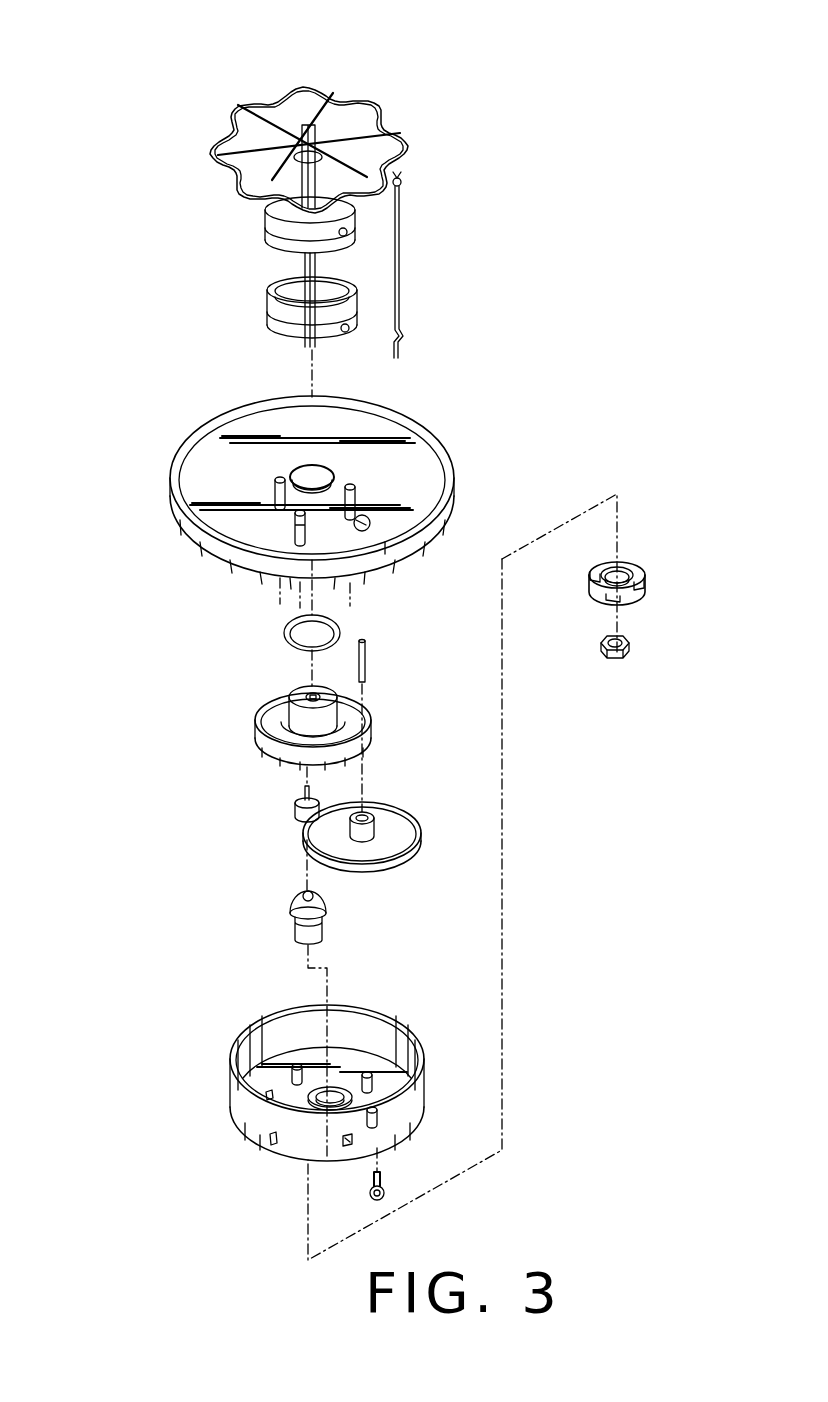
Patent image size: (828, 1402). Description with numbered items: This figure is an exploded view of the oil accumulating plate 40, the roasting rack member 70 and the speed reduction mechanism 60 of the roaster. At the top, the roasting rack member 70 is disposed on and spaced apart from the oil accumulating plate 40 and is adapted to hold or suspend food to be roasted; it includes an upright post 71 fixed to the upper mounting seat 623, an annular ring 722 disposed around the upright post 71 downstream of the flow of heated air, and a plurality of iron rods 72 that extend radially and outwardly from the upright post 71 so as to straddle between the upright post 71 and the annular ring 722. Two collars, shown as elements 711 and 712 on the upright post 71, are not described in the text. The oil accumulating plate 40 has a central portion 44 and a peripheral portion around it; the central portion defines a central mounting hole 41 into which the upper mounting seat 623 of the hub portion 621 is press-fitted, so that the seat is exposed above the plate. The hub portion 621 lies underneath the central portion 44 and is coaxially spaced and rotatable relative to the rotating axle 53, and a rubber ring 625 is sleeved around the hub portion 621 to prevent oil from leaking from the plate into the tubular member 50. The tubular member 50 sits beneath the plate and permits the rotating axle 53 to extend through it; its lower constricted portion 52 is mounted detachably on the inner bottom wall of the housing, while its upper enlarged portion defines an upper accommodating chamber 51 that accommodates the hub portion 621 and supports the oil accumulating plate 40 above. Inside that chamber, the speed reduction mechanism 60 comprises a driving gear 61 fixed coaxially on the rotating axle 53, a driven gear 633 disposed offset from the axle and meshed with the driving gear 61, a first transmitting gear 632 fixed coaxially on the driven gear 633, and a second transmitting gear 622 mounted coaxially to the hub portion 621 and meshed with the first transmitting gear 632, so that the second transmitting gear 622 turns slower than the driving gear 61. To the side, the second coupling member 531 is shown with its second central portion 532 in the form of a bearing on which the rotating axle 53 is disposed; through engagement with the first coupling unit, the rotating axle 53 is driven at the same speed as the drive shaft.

The roasting rack member 70 is at (405, 121).
The iron rods 72 is at (354, 122).
The annular ring 722 is at (367, 100).
The upright post 71 is at (302, 273).
The upper collar 711 is at (275, 218).
The lower collar 712 is at (280, 315).
The oil accumulating plate 40 is at (166, 475).
The central portion 44 is at (332, 470).
The central mounting hole 41 is at (337, 477).
The speed reduction mechanism 60 is at (197, 768).
The rubber ring 625 is at (285, 632).
The second transmitting gear 622 is at (370, 738).
The hub portion 621 is at (300, 717).
The upper mounting seat 623 is at (306, 696).
The driving gear 61 is at (292, 808).
The driven gear 633 is at (407, 863).
The first transmitting gear 632 is at (370, 818).
The rotating axle 53 is at (300, 831).
The second coupling member 531 is at (633, 595).
The second central portion 532 is at (632, 570).
The tubular member 50 is at (226, 1073).
The upper accommodating chamber 51 is at (380, 1030).
The lower constricted portion 52 is at (282, 1148).